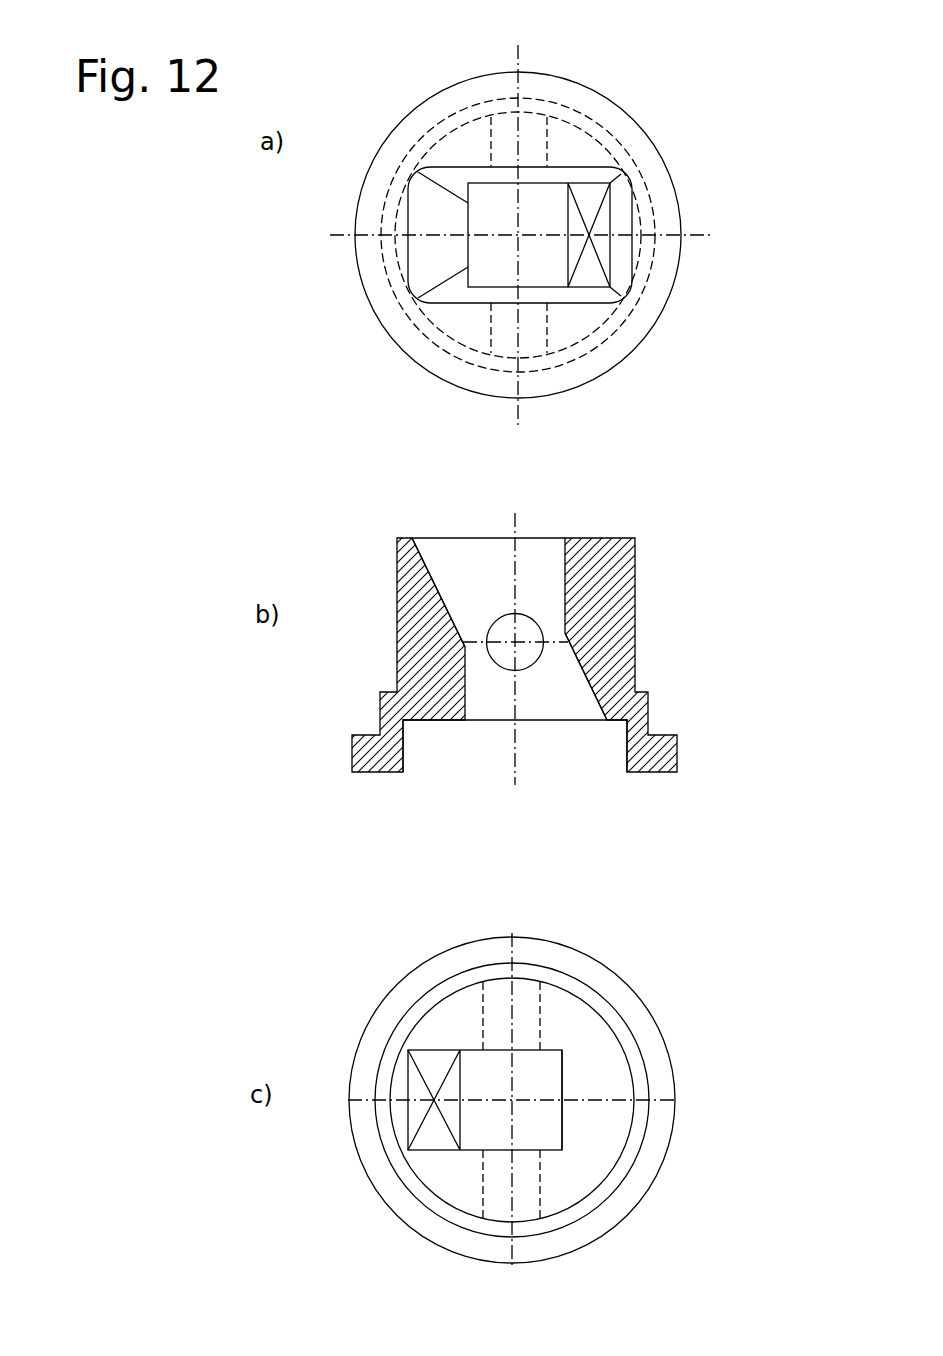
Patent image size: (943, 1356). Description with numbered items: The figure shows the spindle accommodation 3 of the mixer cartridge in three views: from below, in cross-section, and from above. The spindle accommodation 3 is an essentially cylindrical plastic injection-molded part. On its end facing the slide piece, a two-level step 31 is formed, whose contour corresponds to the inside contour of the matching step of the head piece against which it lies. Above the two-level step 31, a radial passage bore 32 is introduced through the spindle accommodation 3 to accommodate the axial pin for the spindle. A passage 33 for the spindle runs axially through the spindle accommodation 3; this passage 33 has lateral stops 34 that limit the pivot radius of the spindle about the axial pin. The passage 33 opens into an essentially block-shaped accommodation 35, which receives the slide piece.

The spindle accommodation 3 is at (680, 82).
The two-level step 31 is at (652, 713).
The radial passage bore 32 is at (525, 632).
The passage 33 is at (493, 260).
The lateral stops 34 is at (445, 600).
The block-shaped accommodation 35 is at (458, 180).